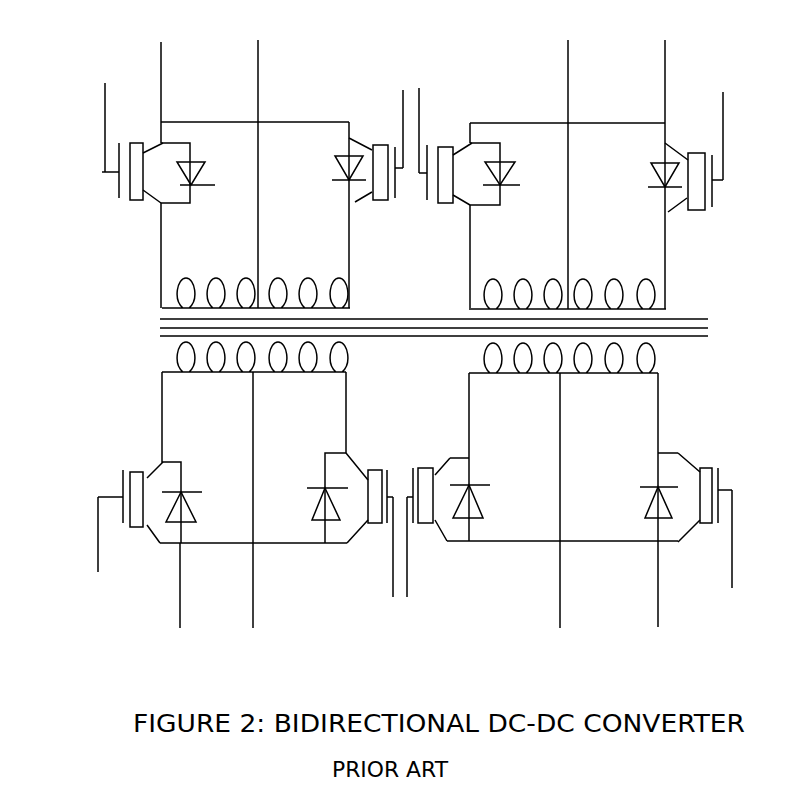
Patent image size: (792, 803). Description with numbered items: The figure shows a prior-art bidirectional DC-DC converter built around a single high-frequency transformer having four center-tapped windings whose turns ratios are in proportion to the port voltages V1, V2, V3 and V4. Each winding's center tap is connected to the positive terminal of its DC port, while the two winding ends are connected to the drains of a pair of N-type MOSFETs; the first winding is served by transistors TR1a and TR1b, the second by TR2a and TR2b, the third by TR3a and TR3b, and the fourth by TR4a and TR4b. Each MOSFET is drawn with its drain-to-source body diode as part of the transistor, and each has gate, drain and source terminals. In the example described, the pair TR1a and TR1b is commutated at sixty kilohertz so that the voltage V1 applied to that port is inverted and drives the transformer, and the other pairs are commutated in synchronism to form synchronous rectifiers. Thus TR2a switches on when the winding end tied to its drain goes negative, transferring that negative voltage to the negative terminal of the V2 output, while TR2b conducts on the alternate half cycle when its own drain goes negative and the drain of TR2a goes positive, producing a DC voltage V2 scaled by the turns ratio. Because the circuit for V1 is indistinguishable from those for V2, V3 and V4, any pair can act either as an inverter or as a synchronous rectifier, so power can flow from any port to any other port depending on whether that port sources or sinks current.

The transistor TR1a is at (159, 175).
The transistor TR1b is at (373, 199).
The transistor TR2a is at (481, 198).
The transistor TR2b is at (695, 174).
The transistor TR3a is at (140, 500).
The transistor TR3b is at (336, 484).
The transistor TR4a is at (473, 485).
The transistor TR4b is at (695, 500).
The voltage V1 is at (210, 161).
The voltage V2 is at (613, 160).
The voltage V3 is at (219, 520).
The voltage V4 is at (606, 520).